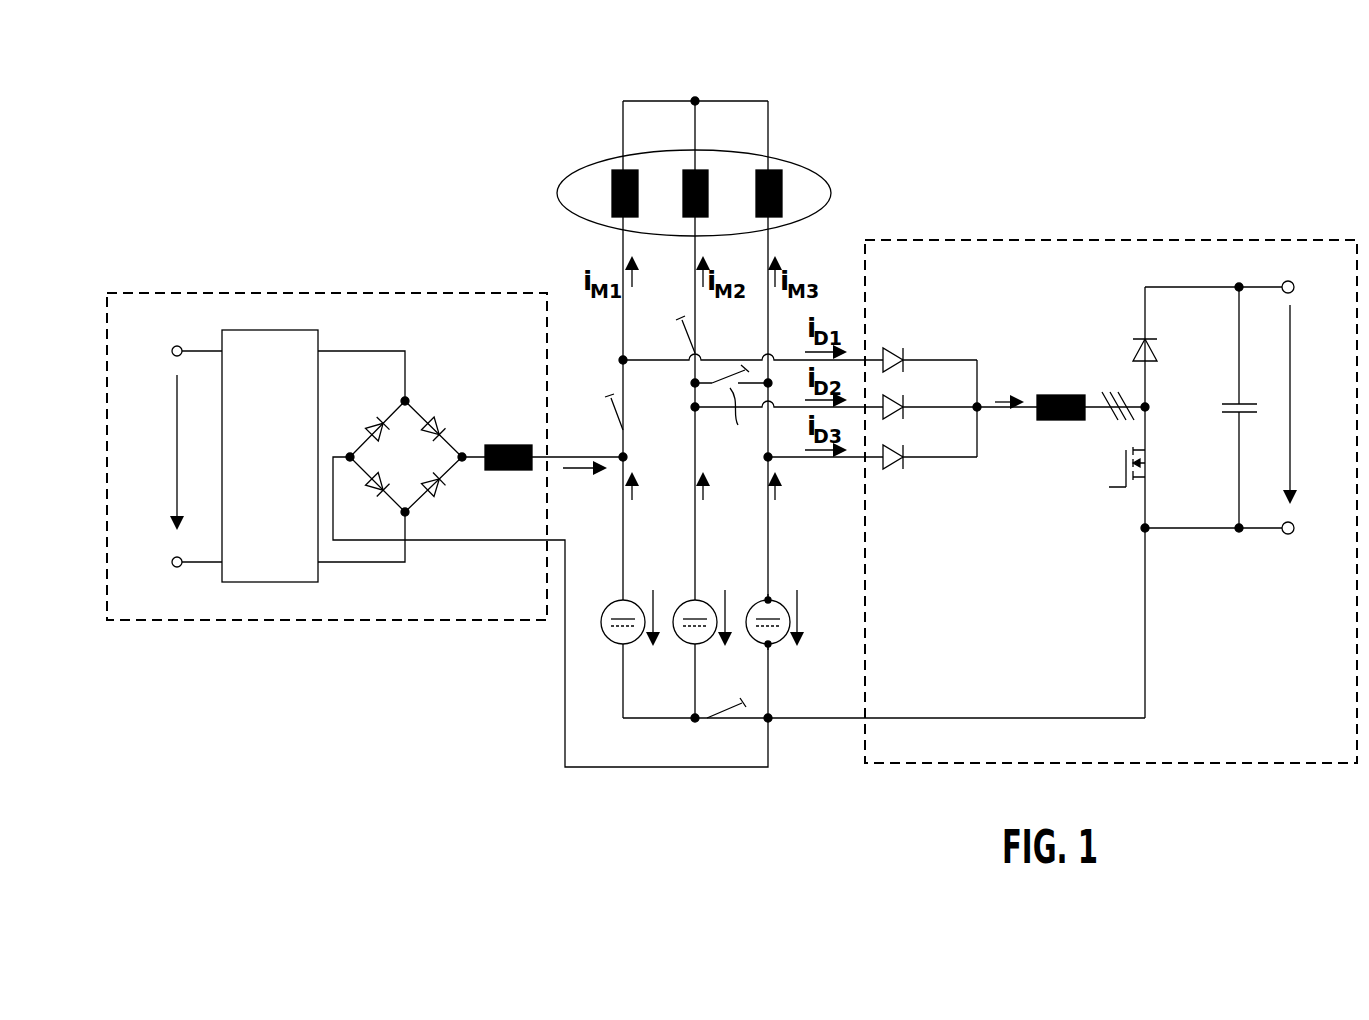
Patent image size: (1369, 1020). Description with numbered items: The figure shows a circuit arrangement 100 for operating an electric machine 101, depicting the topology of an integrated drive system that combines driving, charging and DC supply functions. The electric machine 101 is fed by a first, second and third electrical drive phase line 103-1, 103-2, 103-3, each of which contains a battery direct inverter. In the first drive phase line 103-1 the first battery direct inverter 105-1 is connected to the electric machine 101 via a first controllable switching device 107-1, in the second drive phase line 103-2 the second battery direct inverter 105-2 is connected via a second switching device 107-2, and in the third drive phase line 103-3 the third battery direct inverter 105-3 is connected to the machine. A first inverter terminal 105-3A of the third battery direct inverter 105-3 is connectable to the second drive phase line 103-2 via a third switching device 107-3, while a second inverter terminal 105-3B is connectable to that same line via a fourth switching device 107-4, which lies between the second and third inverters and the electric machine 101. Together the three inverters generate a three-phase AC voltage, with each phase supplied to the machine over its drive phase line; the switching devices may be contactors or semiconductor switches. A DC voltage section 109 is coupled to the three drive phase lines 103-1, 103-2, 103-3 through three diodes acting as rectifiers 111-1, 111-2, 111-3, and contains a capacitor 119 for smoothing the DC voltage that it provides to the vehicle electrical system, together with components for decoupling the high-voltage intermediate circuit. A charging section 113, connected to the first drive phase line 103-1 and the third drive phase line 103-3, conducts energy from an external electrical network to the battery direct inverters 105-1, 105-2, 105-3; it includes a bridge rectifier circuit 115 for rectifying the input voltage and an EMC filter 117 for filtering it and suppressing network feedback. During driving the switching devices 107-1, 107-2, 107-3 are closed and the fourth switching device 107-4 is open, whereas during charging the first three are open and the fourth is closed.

The circuit arrangement 100 is at (548, 160).
The electric machine 101 is at (803, 162).
The first electrical drive phase line 103-1 is at (623, 572).
The second electrical drive phase line 103-2 is at (697, 540).
The third electrical drive phase line 103-3 is at (768, 550).
The first battery direct inverter 105-1 is at (603, 627).
The second battery direct inverter 105-2 is at (697, 647).
The third battery direct inverter 105-3 is at (780, 643).
The first inverter terminal 105-3A is at (770, 647).
The second inverter terminal 105-3B is at (772, 598).
The first controllable switching device 107-1 is at (615, 397).
The second switching device 107-2 is at (680, 325).
The third switching device 107-3 is at (742, 705).
The fourth switching device 107-4 is at (697, 378).
The DC voltage section 109 is at (1088, 240).
The first diode 111-1 is at (890, 352).
The second diode 111-2 is at (895, 402).
The third diode 111-3 is at (897, 465).
The charging section 113 is at (168, 293).
The bridge rectifier circuit 115 is at (378, 498).
The EMC filter 117 is at (263, 348).
The capacitor 119 is at (1230, 414).